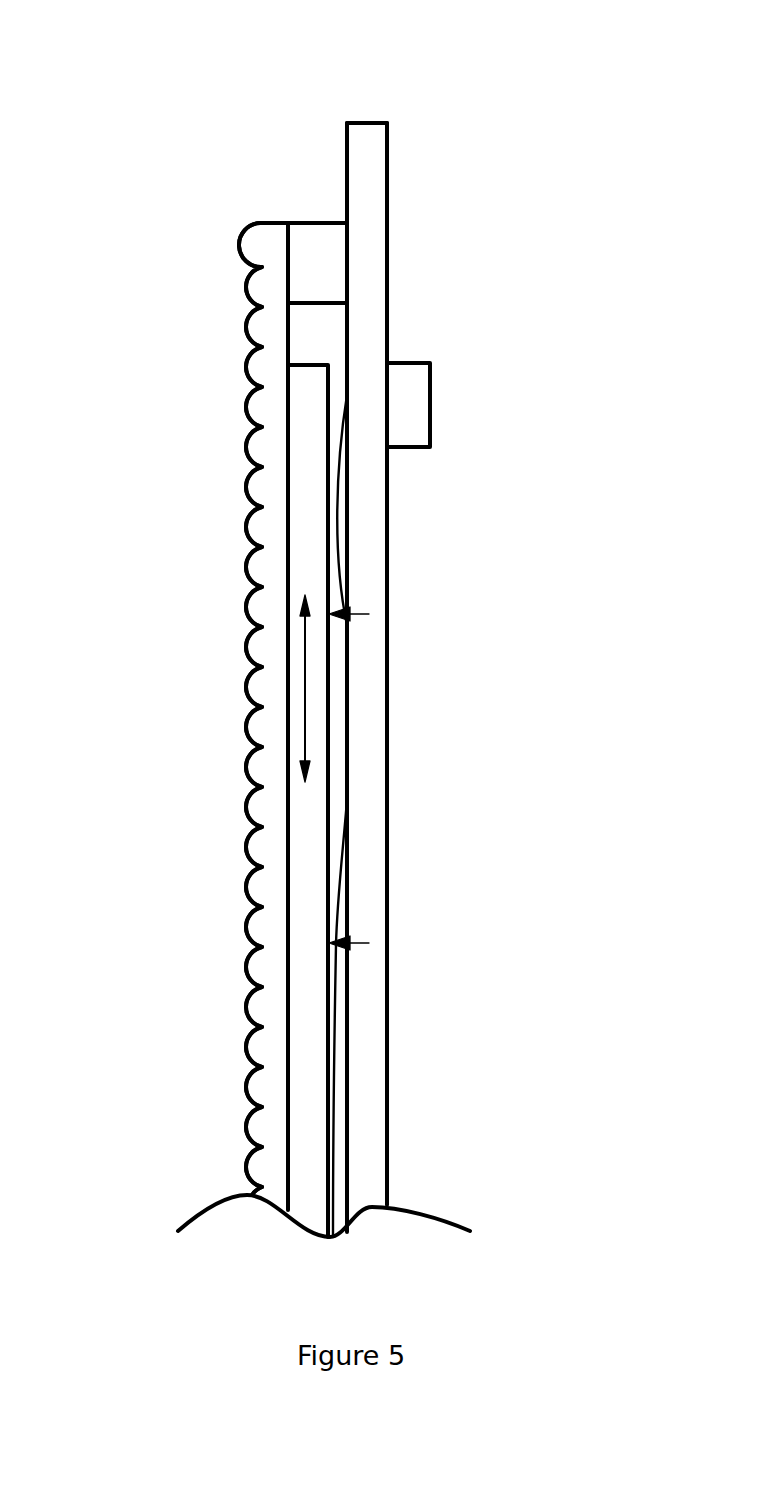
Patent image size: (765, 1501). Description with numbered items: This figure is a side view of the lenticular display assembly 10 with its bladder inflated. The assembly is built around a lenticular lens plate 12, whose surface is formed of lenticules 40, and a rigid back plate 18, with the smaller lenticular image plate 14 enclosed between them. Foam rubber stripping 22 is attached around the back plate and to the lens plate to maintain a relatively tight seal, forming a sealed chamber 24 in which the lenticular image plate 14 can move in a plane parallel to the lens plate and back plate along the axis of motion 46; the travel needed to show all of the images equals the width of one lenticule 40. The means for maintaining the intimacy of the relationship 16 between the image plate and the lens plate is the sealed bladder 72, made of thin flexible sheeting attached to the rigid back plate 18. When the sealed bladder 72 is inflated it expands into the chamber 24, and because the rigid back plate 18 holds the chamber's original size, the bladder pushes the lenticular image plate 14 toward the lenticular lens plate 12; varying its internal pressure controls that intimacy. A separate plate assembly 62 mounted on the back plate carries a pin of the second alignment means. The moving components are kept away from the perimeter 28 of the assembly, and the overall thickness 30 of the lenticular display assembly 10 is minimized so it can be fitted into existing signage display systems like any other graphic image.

The lenticular display assembly 10 is at (360, 86).
The lenticular lens plate 12 is at (262, 317).
The lenticular image plate 14 is at (305, 380).
The means for maintaining the intimacy of the relationship 16 is at (285, 445).
The rigid back plate 18 is at (372, 263).
The foam rubber stripping 22 is at (330, 237).
The sealed chamber 24 is at (320, 330).
The perimeter 28 is at (347, 123).
The thickness 30 is at (381, 1254).
The lenticule 40 is at (247, 507).
The axis of motion 46 is at (304, 695).
The separate plate assembly 62 is at (412, 398).
The sealed bladder 72 is at (343, 523).